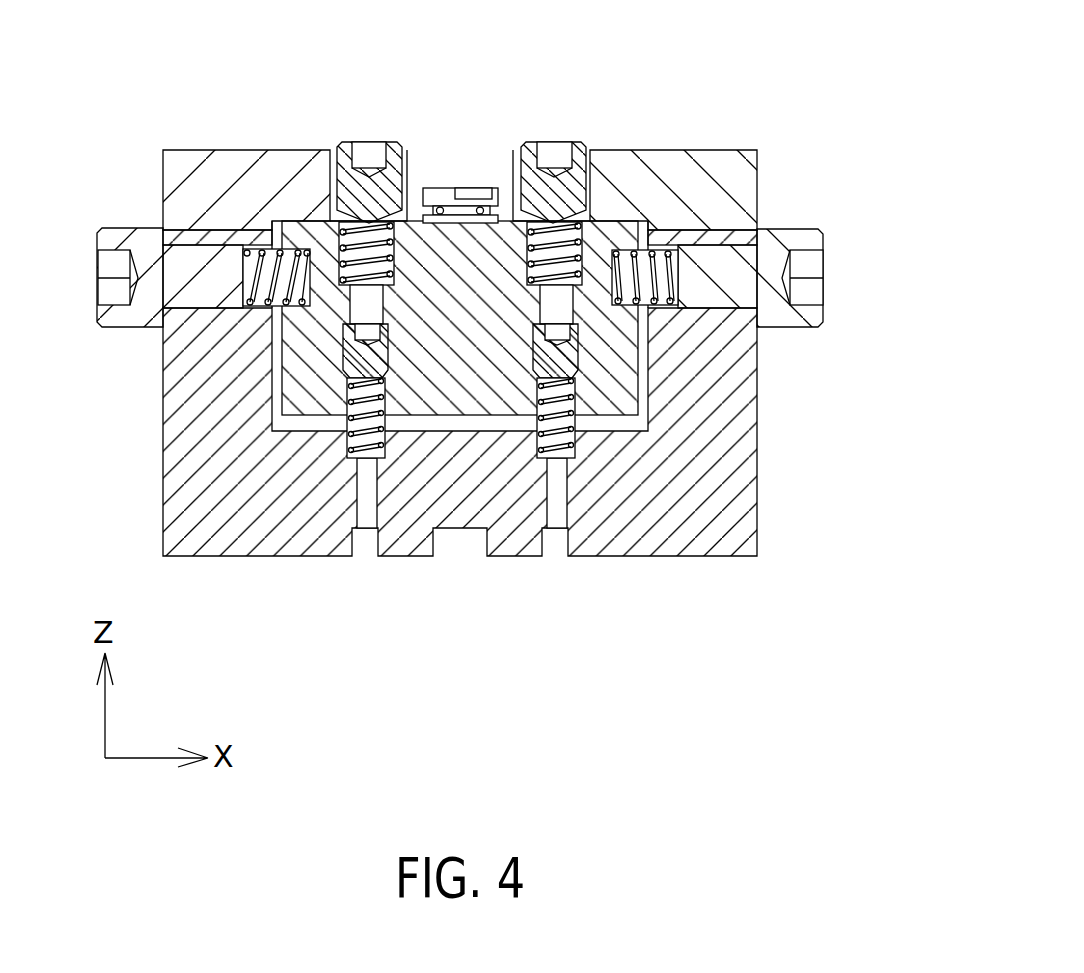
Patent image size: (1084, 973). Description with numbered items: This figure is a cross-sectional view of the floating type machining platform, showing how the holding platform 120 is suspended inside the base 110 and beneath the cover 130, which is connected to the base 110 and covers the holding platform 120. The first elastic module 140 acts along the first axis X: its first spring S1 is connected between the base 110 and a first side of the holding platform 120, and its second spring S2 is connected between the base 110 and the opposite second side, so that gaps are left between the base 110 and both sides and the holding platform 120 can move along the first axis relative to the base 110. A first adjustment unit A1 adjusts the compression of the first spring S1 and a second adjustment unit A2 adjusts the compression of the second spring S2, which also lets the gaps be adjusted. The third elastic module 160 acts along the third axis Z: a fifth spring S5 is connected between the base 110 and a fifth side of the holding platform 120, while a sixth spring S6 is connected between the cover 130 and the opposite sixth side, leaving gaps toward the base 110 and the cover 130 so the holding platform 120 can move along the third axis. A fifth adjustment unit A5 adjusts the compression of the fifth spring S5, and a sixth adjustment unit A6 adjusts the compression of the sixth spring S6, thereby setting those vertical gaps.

The base 110 is at (738, 467).
The holding platform 120 is at (630, 386).
The cover 130 is at (718, 163).
The first elastic module 140 is at (858, 274).
The third elastic module 160 is at (557, 130).
The first adjustment unit A1 is at (790, 236).
The second adjustment unit A2 is at (126, 236).
The fifth adjustment unit A5 is at (350, 362).
The sixth adjustment unit A6 is at (343, 158).
The first spring S1 is at (660, 247).
The second spring S2 is at (266, 250).
The fifth spring S5 is at (383, 425).
The sixth spring S6 is at (385, 232).